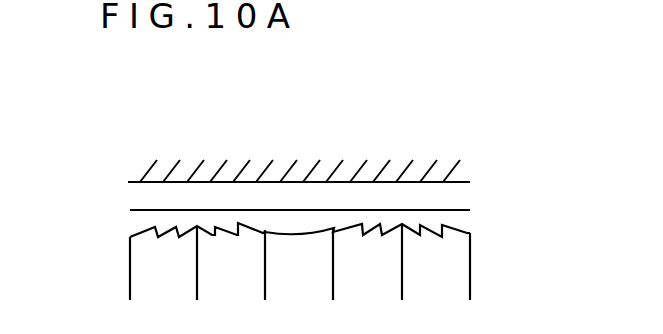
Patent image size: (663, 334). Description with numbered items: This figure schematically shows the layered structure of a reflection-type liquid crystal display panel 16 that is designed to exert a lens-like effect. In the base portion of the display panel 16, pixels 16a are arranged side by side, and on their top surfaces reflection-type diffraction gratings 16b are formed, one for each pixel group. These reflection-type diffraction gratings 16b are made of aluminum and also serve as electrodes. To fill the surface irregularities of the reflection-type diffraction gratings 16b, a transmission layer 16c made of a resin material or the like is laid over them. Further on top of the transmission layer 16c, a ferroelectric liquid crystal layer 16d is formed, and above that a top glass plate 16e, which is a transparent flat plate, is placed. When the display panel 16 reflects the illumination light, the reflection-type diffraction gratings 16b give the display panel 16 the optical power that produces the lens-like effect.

The display panel 16 is at (346, 125).
The pixels 16a is at (480, 277).
The reflection-type diffraction gratings 16b is at (143, 231).
The transmission layer 16c is at (468, 221).
The ferroelectric liquid crystal layer 16d is at (137, 192).
The top glass plate 16e is at (470, 170).